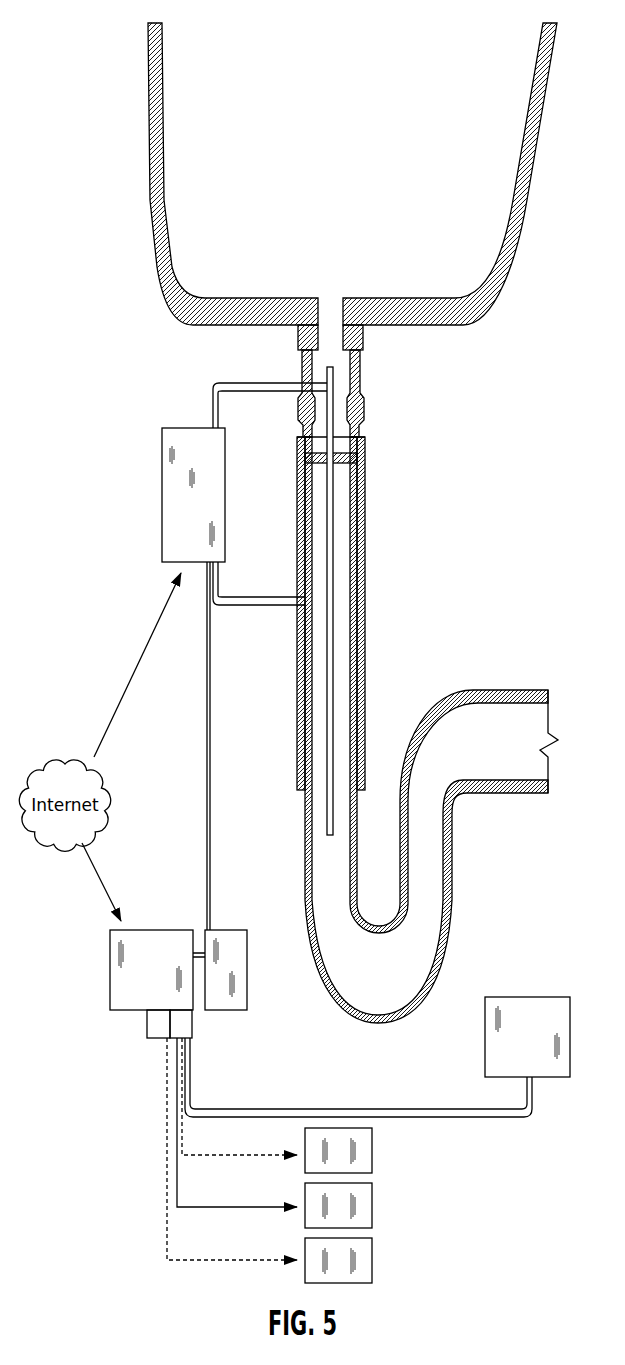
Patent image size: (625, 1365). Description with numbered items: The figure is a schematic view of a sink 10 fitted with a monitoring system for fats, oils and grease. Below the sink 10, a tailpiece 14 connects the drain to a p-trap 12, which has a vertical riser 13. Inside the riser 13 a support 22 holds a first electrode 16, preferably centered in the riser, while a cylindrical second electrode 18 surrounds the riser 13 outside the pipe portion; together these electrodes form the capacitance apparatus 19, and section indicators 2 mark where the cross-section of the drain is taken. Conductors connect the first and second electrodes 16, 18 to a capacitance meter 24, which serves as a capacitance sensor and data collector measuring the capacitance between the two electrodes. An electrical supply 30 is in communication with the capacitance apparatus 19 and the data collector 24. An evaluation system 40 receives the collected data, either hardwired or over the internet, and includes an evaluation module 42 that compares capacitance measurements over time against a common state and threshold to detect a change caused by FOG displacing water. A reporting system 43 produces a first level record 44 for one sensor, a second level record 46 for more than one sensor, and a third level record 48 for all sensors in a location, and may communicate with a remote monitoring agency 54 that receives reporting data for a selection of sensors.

The sink 10 is at (532, 187).
The p-trap 12 is at (513, 690).
The vertical riser 13 is at (357, 670).
The tailpiece 14 is at (358, 377).
The first electrode 16 is at (333, 418).
The second electrode 18 is at (350, 453).
The capacitance apparatus 19 is at (458, 430).
The support 22 is at (348, 478).
The capacitance meter 24 is at (178, 507).
The electrical supply 30 is at (238, 945).
The evaluation system 40 is at (151, 970).
The evaluation module 42 is at (153, 1022).
The reporting system 43 is at (188, 1022).
The first level record 44 is at (368, 1135).
The second level record 46 is at (368, 1190).
The third level record 48 is at (368, 1245).
The remote monitoring agency 54 is at (377, 1057).
The section line 2- 2 is at (244, 560).